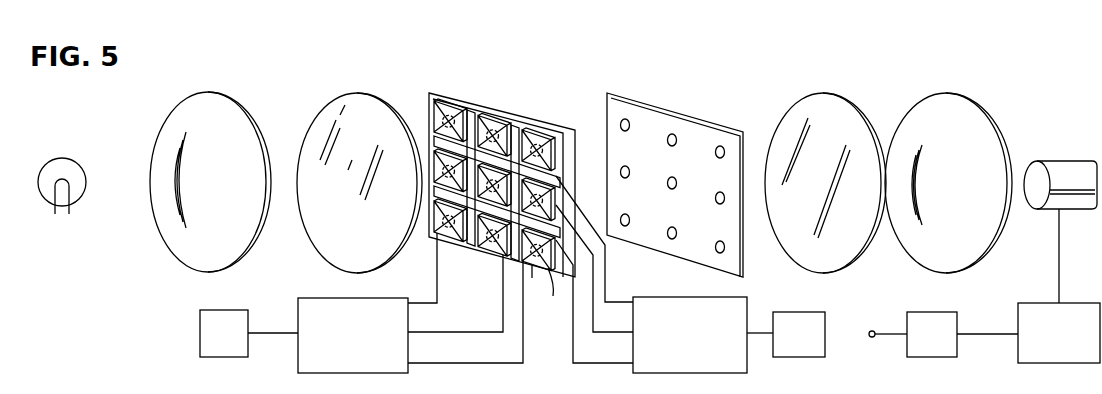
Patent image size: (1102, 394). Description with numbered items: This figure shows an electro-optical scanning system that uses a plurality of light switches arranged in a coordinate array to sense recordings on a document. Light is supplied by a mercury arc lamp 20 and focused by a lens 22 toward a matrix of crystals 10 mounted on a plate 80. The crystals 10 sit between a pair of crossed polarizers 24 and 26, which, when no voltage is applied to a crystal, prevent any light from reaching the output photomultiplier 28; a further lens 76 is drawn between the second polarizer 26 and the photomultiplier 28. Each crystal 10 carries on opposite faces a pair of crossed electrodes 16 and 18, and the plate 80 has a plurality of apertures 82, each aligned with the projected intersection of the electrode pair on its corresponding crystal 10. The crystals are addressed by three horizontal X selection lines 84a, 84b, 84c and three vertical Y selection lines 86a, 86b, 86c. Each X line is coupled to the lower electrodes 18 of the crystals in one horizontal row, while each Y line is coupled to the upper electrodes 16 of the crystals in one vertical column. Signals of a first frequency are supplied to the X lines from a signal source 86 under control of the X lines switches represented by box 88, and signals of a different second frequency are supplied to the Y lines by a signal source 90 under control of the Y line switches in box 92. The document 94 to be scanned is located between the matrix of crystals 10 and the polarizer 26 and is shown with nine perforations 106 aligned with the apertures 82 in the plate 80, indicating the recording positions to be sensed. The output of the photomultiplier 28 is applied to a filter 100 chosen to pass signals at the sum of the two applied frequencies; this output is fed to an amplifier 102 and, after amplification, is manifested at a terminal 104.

The crystal 10 is at (497, 114).
The electrode 16 is at (438, 115).
The lower electrode 18 is at (447, 112).
The mercury arc lamp 20 is at (45, 190).
The lens 22 is at (210, 102).
The polarizer 24 is at (332, 106).
The polarizer 26 is at (817, 105).
The output photomultiplier 28 is at (1055, 164).
The lens 76 is at (942, 107).
The plate 80 is at (526, 116).
The aperture 82 is at (545, 135).
The X selection line 84a is at (607, 285).
The X selection line 84b is at (622, 335).
The X selection line 84c is at (618, 365).
The signal source 86 is at (818, 330).
The Y selection line 86a is at (437, 266).
The Y selection line 86b is at (503, 304).
The Y selection line 86c is at (511, 364).
The X lines switches 88 is at (718, 366).
The signal source 90 is at (238, 312).
The Y line switches 92 is at (388, 369).
The document 94 is at (698, 125).
The filter 100 is at (1084, 293).
The amplifier 102 is at (957, 316).
The terminal 104 is at (872, 338).
The perforation 106 is at (670, 178).